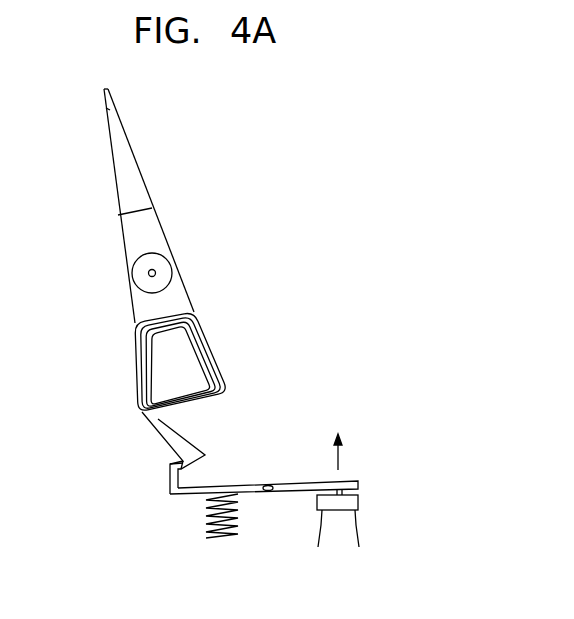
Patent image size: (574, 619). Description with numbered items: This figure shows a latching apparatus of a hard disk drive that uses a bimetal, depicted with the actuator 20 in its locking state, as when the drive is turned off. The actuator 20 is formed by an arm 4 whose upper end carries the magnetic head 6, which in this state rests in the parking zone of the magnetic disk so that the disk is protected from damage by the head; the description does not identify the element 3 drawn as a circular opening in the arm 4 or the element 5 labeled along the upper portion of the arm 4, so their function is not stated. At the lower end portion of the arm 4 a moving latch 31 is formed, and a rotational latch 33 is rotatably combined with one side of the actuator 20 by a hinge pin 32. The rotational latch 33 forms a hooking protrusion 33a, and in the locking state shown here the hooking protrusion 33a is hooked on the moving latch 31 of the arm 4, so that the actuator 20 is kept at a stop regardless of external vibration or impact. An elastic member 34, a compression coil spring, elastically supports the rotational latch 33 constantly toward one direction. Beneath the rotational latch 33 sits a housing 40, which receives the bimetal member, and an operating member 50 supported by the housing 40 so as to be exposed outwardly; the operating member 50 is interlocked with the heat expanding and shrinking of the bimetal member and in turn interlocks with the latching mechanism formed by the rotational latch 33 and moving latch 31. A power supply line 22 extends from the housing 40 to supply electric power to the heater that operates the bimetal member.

The actuator 20 is at (187, 173).
The pivot hole 3 is at (163, 265).
The arm 4 is at (133, 298).
The tip section 5 is at (122, 172).
The magnetic head 6 is at (102, 103).
The moving latch 31 is at (193, 443).
The hinge pin 32 is at (272, 488).
The rotational latch 33 is at (347, 482).
The hooking protrusion 33a is at (170, 463).
The elastic member 34 is at (203, 513).
The housing 40 is at (358, 503).
The operating member 50 is at (342, 492).
The power supply line 22 is at (357, 527).